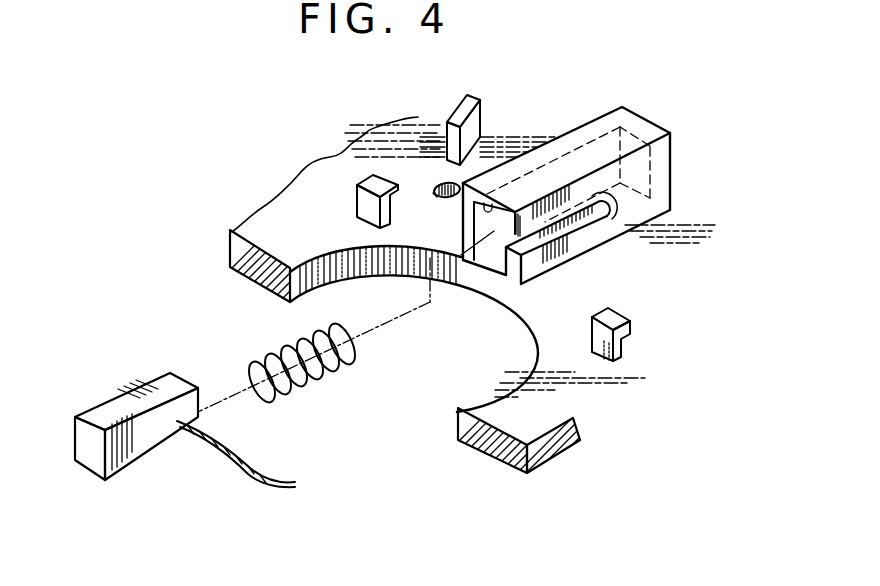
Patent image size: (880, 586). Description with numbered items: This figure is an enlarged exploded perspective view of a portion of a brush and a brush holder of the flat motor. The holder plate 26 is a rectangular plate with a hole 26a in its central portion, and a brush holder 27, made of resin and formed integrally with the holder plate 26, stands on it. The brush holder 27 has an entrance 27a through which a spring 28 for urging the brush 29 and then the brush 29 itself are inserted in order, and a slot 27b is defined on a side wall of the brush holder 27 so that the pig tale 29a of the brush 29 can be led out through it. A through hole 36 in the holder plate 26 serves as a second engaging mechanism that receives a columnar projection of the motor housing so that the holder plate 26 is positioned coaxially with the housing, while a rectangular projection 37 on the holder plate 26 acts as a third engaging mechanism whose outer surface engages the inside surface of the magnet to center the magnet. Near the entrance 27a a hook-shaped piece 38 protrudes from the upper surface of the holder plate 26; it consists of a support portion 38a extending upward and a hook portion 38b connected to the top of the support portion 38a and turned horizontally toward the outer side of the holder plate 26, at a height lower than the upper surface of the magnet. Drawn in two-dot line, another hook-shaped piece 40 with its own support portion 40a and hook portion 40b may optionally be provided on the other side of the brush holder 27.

The holder plate 26 is at (525, 400).
The hole 26a is at (308, 273).
The brush holder 27 is at (611, 120).
The entrance 27a is at (488, 200).
The slot 27b is at (583, 222).
The spring 28 is at (320, 373).
The brush 29 is at (108, 410).
The pig tale 29a is at (257, 468).
The through hole 36 is at (439, 204).
The rectangular projection 37 is at (463, 102).
The hook-shaped piece 38 is at (367, 163).
The support portion 38a is at (367, 202).
The hook portion 38b is at (371, 176).
The hook-shaped piece 40 is at (649, 324).
The support portion 40a is at (620, 352).
The hook portion 40b is at (620, 317).